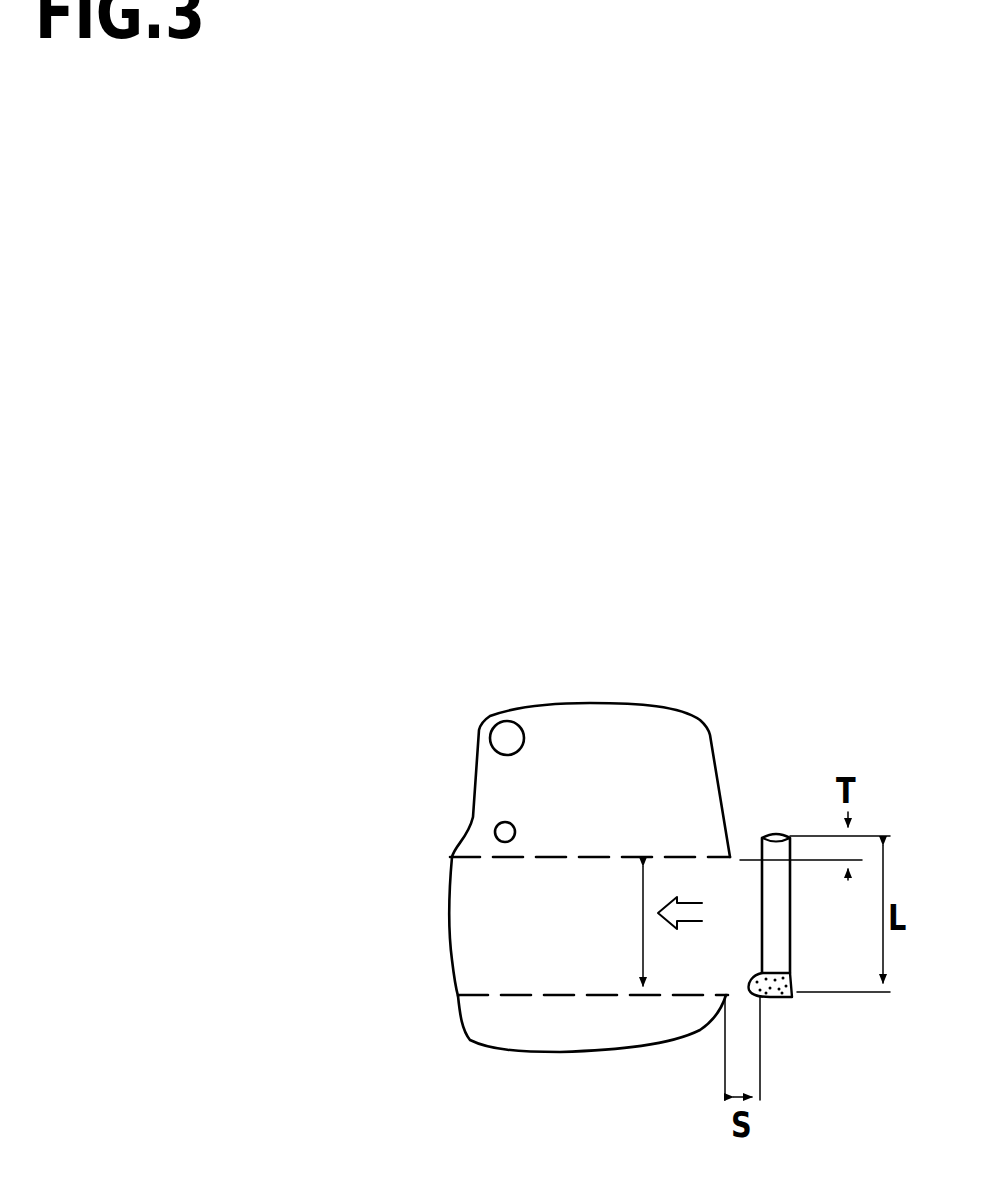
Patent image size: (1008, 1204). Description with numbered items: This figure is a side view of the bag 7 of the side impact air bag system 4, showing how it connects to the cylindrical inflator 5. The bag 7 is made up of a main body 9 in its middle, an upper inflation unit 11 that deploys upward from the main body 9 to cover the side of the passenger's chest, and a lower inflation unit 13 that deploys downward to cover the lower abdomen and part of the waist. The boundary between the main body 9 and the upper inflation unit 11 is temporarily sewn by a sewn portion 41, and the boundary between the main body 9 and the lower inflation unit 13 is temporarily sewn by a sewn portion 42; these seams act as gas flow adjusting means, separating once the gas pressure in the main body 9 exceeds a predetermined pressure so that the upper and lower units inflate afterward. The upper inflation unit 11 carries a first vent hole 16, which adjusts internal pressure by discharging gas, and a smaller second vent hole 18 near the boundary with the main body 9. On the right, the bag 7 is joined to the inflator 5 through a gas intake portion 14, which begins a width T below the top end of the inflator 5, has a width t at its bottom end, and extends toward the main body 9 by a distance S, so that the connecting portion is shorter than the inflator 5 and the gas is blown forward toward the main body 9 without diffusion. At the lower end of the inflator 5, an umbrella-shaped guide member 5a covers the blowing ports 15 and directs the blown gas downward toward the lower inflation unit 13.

The side impact air bag system 4 is at (742, 703).
The inflator 5 is at (773, 848).
The guide member 5a is at (792, 977).
The bag 7 is at (440, 983).
The main body 9 is at (490, 908).
The upper inflation unit 11 is at (588, 723).
The lower inflation unit 13 is at (585, 1033).
The gas intake portion 14 is at (743, 993).
The blowing ports 15 is at (787, 998).
The first vent hole 16 is at (507, 737).
The second vent hole 18 is at (495, 832).
The sewn portion 41 is at (598, 857).
The sewn portion 42 is at (560, 998).